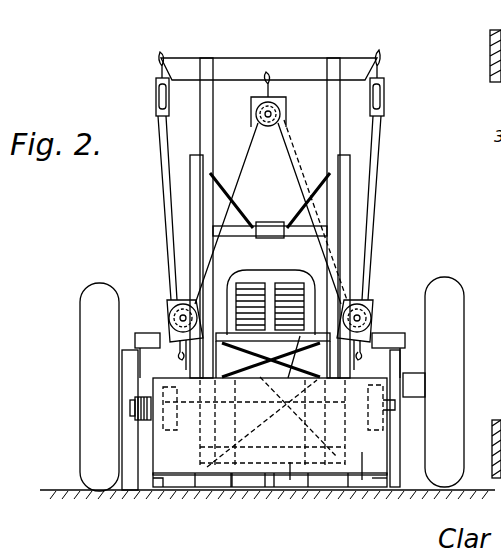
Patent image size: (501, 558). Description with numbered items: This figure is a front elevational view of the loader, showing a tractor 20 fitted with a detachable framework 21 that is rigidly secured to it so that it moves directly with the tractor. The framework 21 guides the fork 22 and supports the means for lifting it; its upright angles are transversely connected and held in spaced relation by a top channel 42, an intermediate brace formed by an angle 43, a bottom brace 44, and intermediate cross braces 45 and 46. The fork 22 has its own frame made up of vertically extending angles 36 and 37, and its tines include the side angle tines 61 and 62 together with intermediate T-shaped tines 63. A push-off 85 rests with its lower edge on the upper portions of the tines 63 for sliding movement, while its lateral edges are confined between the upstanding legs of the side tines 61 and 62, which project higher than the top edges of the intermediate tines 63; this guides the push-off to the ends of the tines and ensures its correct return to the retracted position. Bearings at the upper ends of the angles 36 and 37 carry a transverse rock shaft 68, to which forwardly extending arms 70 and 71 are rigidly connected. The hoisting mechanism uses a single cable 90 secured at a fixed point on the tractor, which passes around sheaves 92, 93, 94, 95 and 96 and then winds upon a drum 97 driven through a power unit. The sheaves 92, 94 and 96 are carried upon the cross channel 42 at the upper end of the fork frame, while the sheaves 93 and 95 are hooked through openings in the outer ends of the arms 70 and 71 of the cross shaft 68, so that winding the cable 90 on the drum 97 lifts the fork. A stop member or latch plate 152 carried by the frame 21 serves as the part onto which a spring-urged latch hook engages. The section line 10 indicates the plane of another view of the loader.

The section line 10 is at (195, 172).
The tractor 20 is at (276, 268).
The framework 21 is at (312, 56).
The fork 22 is at (214, 480).
The vertically extending angle 36 is at (400, 357).
The vertically extending angle 37 is at (140, 355).
The top channel 42 is at (228, 68).
The angle 43 is at (232, 232).
The bottom brace 44 is at (288, 488).
The intermediate cross brace 45 is at (254, 424).
The intermediate cross brace 46 is at (297, 422).
The side angle tine 61 is at (380, 490).
The side angle tine 62 is at (182, 488).
The T-shaped tine 63 is at (268, 484).
The rock shaft 68 is at (289, 336).
The forwardly extending arm 70 is at (388, 347).
The forwardly extending arm 71 is at (160, 342).
The push-off 85 is at (362, 484).
The cable 90 is at (170, 228).
The sheave 92 is at (384, 88).
The sheave 93 is at (372, 306).
The sheave 94 is at (284, 108).
The sheave 95 is at (170, 306).
The sheave 96 is at (156, 93).
The drum 97 is at (135, 413).
The latch plate 152 is at (281, 228).